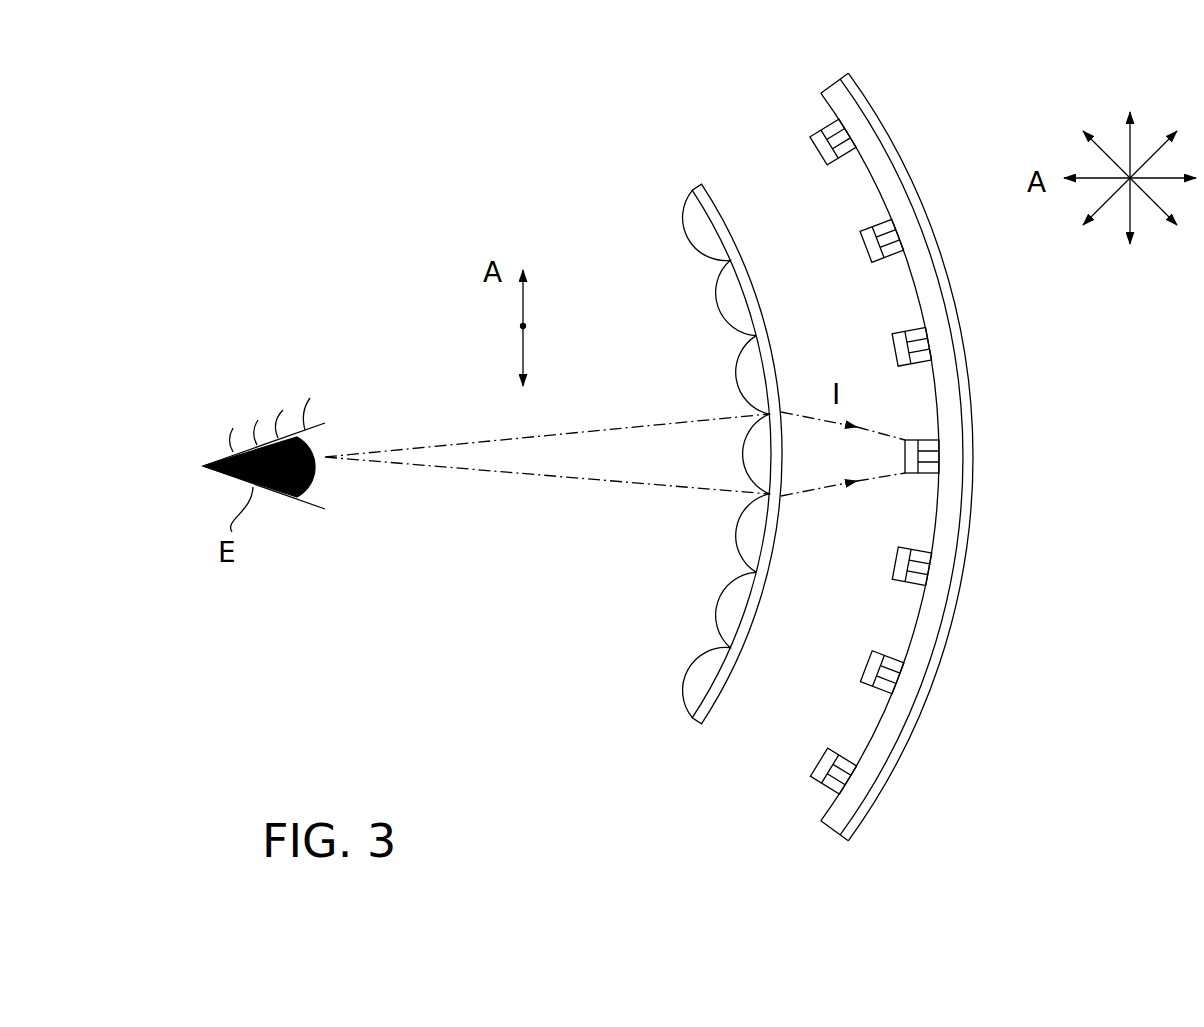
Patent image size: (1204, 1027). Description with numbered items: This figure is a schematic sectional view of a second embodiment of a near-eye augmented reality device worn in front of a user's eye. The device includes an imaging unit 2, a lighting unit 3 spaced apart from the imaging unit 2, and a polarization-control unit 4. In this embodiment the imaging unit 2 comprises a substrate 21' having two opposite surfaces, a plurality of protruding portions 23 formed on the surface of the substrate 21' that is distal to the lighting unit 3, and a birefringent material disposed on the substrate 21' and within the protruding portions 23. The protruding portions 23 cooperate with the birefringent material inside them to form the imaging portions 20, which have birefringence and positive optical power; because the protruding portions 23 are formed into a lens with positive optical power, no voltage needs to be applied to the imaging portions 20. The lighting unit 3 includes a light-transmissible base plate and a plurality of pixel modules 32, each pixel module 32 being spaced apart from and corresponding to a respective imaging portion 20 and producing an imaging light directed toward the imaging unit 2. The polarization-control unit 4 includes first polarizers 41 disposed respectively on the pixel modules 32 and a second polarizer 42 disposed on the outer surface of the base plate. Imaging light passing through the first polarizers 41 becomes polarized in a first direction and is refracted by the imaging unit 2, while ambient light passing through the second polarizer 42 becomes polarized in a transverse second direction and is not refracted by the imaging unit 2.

The imaging unit 2 is at (660, 182).
The substrate 21' is at (737, 430).
The protruding portions 23 is at (683, 228).
The imaging portions 20 is at (706, 601).
The lighting unit 3 is at (817, 62).
The polarization-control unit 4 is at (825, 844).
The first polarizers 41 is at (898, 565).
The pixel modules 32 is at (860, 675).
The second polarizer 42 is at (936, 683).